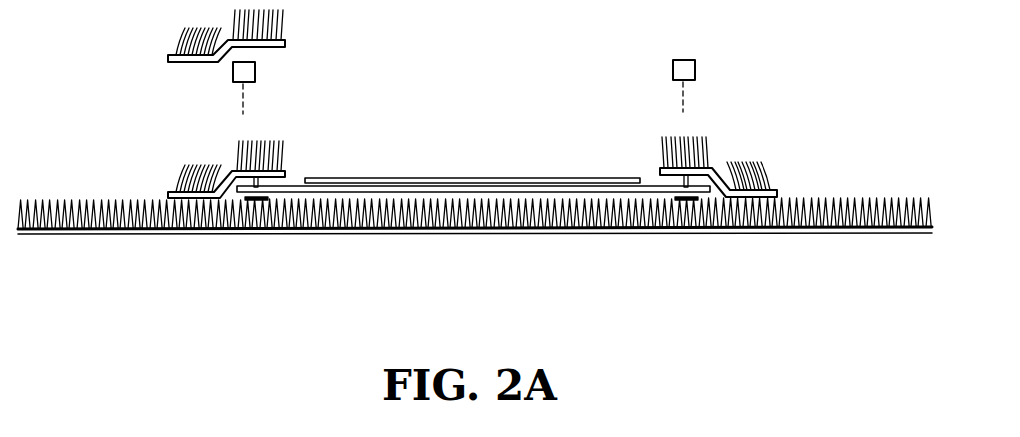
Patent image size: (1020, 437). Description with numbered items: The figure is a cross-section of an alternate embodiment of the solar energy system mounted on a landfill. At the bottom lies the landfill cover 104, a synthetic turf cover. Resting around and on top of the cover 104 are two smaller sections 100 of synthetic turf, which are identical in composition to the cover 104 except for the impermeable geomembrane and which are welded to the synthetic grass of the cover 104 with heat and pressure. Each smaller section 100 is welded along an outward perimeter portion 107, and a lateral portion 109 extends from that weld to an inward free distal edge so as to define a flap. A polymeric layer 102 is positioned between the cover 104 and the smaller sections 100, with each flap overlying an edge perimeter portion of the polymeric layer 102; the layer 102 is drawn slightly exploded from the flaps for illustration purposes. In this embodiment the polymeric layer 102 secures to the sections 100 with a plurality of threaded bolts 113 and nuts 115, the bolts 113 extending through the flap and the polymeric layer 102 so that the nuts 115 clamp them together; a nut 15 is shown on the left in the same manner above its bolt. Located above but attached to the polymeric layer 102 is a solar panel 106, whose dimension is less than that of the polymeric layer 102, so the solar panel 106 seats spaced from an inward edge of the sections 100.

The sensor 15 is at (255, 72).
The smaller section of synthetic turf 100 is at (180, 175).
The polymeric layer 102 is at (448, 192).
The landfill cover 104 is at (823, 198).
The solar panel 106 is at (553, 177).
The outward perimeter portion 107 is at (198, 197).
The lateral portion 109 is at (256, 127).
The threaded bolts 113 is at (263, 187).
The nuts 115 is at (673, 73).